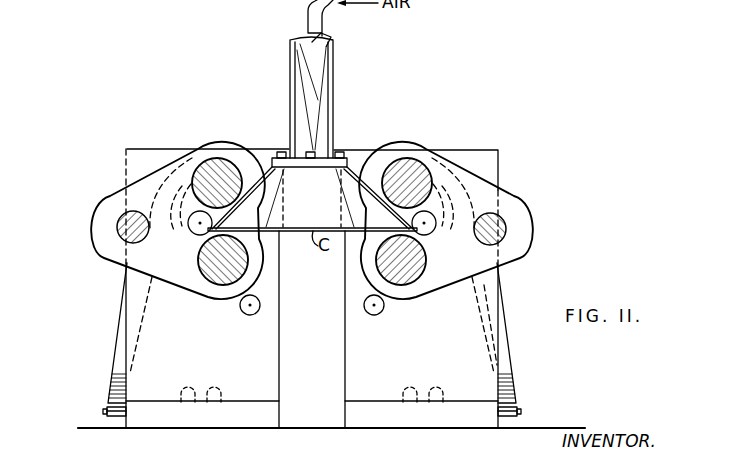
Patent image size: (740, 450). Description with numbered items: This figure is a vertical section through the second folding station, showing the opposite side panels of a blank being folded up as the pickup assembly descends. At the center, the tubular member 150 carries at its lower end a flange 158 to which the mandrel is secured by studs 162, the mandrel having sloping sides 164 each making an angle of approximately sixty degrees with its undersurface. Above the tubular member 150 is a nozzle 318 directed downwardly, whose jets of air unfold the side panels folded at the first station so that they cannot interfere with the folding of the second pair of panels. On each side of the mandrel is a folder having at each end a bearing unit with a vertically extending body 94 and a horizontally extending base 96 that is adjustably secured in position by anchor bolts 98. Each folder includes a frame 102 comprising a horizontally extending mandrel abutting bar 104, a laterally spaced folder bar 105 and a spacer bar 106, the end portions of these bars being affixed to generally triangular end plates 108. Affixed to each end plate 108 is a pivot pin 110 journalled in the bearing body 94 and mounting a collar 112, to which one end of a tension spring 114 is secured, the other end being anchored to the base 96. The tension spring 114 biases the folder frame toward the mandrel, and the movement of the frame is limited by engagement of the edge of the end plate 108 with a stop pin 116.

The body 94 is at (345, 302).
The base 96 is at (433, 418).
The anchor bolts 98 is at (424, 384).
The frame 102 is at (119, 139).
The mandrel abutting bar 104 is at (206, 297).
The folder bar 105 is at (212, 166).
The spacer bar 106 is at (117, 230).
The end plates 108 is at (173, 172).
The pivot pin 110 is at (197, 237).
The collar 112 is at (125, 175).
The tension spring 114 is at (116, 358).
The stop pin 116 is at (248, 313).
The tubular member 150 is at (329, 78).
The flange 158 is at (341, 157).
The studs 162 is at (282, 152).
The sloping sides 164 is at (358, 168).
The nozzle 318 is at (312, 1).